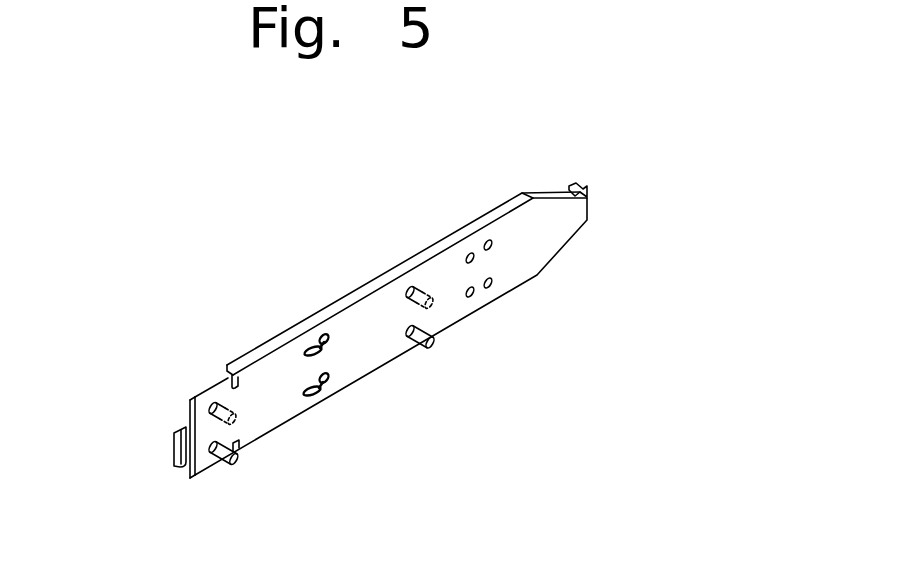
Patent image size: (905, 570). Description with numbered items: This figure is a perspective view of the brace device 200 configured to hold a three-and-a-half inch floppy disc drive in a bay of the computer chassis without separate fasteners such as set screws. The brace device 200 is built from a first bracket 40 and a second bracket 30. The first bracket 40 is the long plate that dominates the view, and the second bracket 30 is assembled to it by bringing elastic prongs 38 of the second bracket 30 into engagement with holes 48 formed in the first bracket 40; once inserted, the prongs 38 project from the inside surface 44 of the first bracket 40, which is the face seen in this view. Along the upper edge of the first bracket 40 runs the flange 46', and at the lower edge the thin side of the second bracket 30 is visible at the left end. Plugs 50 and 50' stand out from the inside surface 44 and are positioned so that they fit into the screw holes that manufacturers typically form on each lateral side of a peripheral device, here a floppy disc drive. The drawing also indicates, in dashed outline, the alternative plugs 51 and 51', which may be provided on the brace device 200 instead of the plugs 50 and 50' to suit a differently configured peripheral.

The brace device 200 is at (164, 158).
The second bracket 30 is at (156, 460).
The first bracket 40 is at (260, 323).
The inside surface 44 is at (390, 345).
The flange 46' is at (407, 263).
The holes 48 is at (315, 347).
The elastic prongs 38 is at (323, 393).
The plug 50 is at (234, 483).
The plug 50' is at (458, 356).
The plug 51 is at (203, 377).
The plug 51' is at (403, 256).